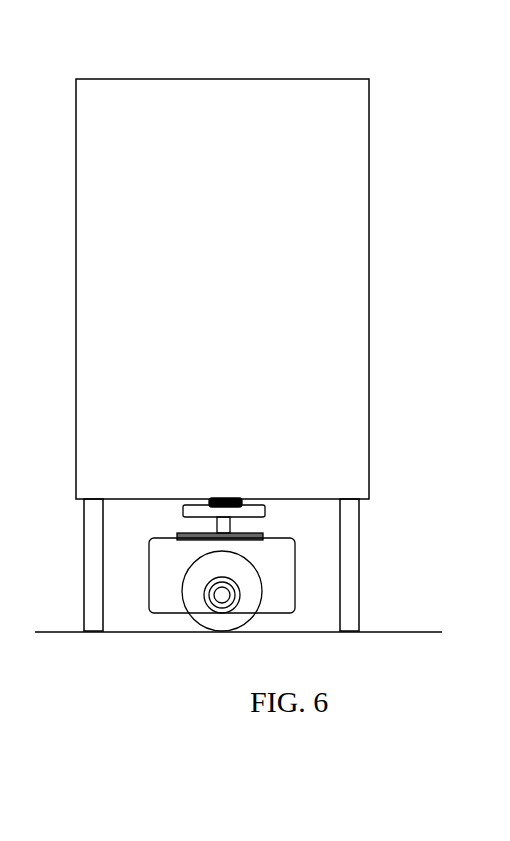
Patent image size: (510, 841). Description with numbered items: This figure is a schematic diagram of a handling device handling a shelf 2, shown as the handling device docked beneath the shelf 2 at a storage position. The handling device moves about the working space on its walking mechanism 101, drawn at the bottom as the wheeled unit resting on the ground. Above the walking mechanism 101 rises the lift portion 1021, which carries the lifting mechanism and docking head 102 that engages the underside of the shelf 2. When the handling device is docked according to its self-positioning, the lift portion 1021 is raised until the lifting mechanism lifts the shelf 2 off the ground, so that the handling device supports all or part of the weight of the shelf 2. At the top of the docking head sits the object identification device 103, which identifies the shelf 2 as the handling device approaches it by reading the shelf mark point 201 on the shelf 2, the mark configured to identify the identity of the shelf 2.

The shelf 2 is at (369, 79).
The walking mechanism 101 is at (245, 593).
The lifting mechanism and docking head 102 is at (244, 510).
The lift portion 1021 is at (231, 524).
The object identification device 103 is at (237, 498).
The shelf mark point 201 is at (226, 497).